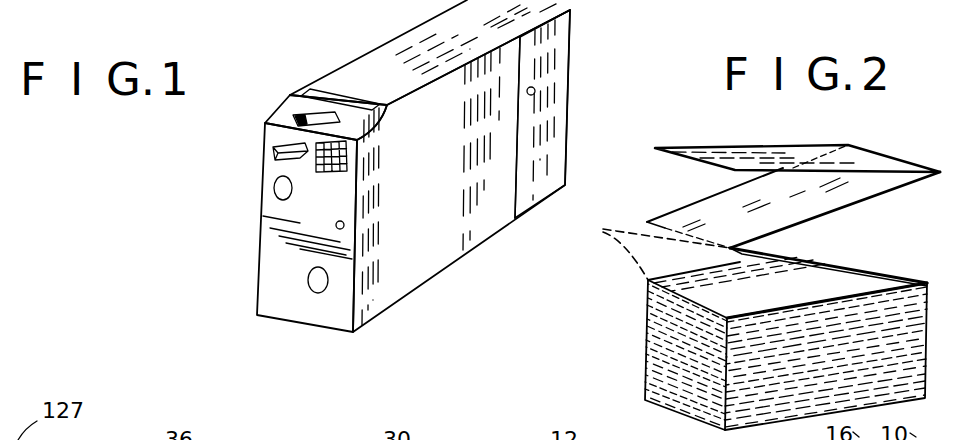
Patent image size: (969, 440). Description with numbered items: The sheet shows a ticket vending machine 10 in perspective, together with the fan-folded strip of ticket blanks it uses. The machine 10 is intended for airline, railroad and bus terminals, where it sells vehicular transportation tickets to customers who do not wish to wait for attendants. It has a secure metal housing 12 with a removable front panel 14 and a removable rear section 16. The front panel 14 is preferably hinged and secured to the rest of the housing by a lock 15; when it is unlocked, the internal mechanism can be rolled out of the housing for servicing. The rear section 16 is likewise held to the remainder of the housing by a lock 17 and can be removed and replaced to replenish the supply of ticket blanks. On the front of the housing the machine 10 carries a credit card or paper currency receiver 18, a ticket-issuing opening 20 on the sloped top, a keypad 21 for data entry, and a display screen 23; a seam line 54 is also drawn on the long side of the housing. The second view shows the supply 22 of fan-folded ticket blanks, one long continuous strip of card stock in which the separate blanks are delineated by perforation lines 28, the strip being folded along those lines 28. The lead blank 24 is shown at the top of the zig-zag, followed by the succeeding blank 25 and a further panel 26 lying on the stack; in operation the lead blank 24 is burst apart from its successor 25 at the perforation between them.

In FIG. 1, the ticket vending machine 10 is at (585, 95).
In FIG. 1, the secure metal housing 12 is at (385, 45).
In FIG. 1, the removable front panel 14 is at (272, 253).
In FIG. 1, the lock 15 is at (345, 228).
In FIG. 1, the removable rear section 16 is at (570, 33).
In FIG. 1, the lock 17 is at (527, 92).
In FIG. 1, the credit card or paper currency receiver 18 is at (273, 152).
In FIG. 1, the ticket-issuing opening 20 is at (303, 115).
In FIG. 1, the keypad 21 is at (349, 173).
In FIG. 1, the display screen 23 is at (350, 93).
In FIG. 1, the seam line 54 is at (520, 143).
In FIG. 2, the supply of fan-folded ticket blanks 22 is at (627, 345).
In FIG. 2, the lead blank 24 is at (715, 146).
In FIG. 2, the succeeding blank 25 is at (813, 203).
In FIG. 2, the lower panel 26 is at (805, 262).
In FIG. 2, the perforation lines 28 is at (651, 249).